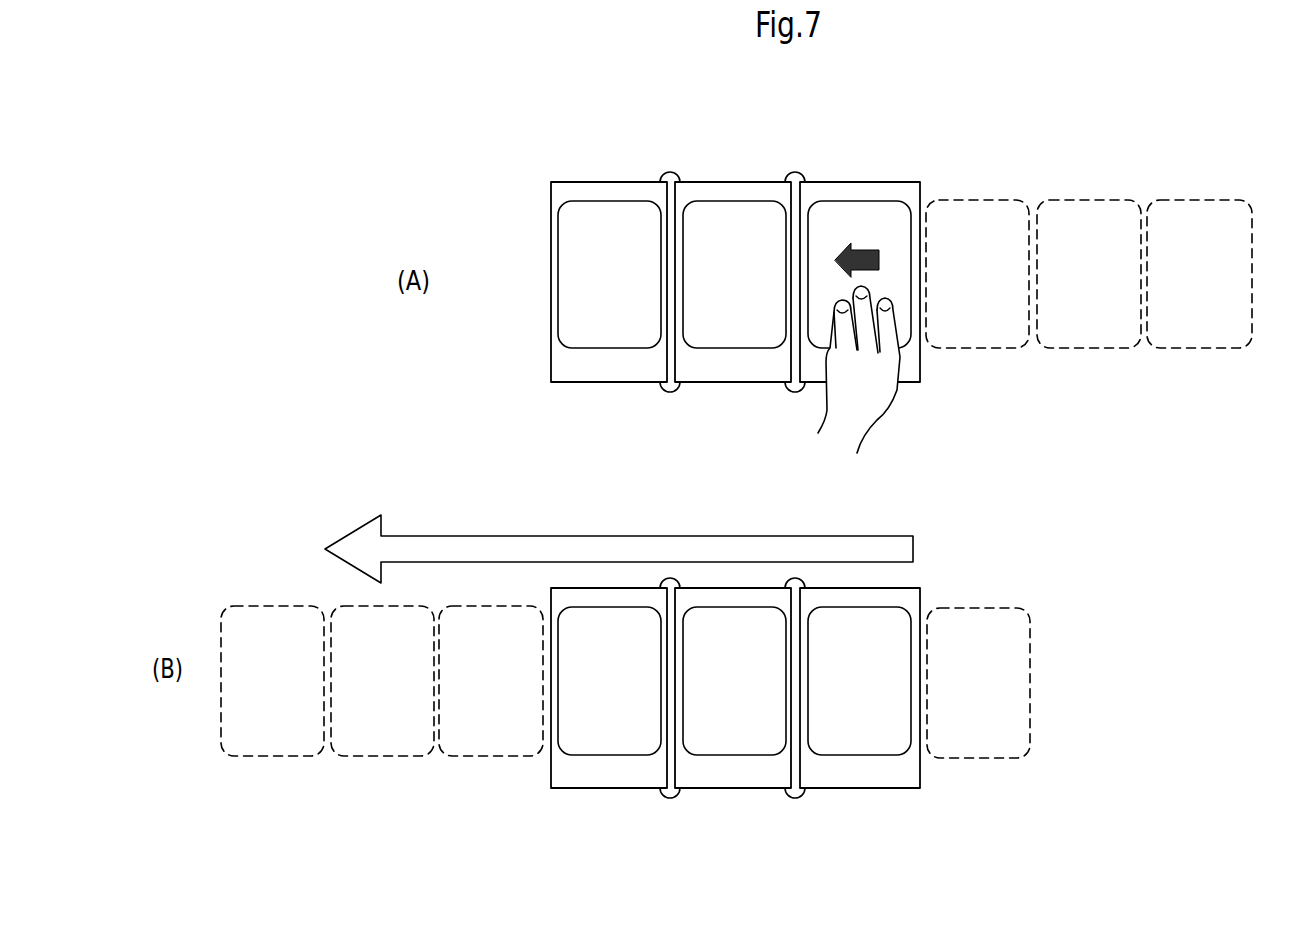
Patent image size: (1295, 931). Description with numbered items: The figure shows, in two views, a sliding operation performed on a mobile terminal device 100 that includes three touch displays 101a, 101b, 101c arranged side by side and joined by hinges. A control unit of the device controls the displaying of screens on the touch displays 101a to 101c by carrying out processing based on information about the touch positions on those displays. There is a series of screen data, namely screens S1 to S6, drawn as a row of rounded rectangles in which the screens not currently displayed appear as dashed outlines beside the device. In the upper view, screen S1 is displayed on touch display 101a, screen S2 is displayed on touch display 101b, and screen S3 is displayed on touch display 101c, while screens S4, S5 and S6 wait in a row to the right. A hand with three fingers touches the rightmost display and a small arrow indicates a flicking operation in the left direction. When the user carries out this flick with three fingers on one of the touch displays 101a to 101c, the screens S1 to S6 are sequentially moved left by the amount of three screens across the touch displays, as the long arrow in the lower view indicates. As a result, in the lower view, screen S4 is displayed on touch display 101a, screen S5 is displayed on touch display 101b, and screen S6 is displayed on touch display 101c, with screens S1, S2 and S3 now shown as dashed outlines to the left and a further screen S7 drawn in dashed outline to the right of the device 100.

The mobile terminal device 100 is at (745, 476).
The touch display 101a is at (620, 201).
The touch display 101b is at (727, 201).
The touch display 101c is at (870, 201).
The screen S1 is at (577, 210).
The screen S2 is at (757, 205).
The screen S3 is at (900, 205).
The screen S4 is at (997, 205).
The screen S5 is at (1105, 205).
The screen S6 is at (1220, 205).
The screen S7 is at (985, 610).